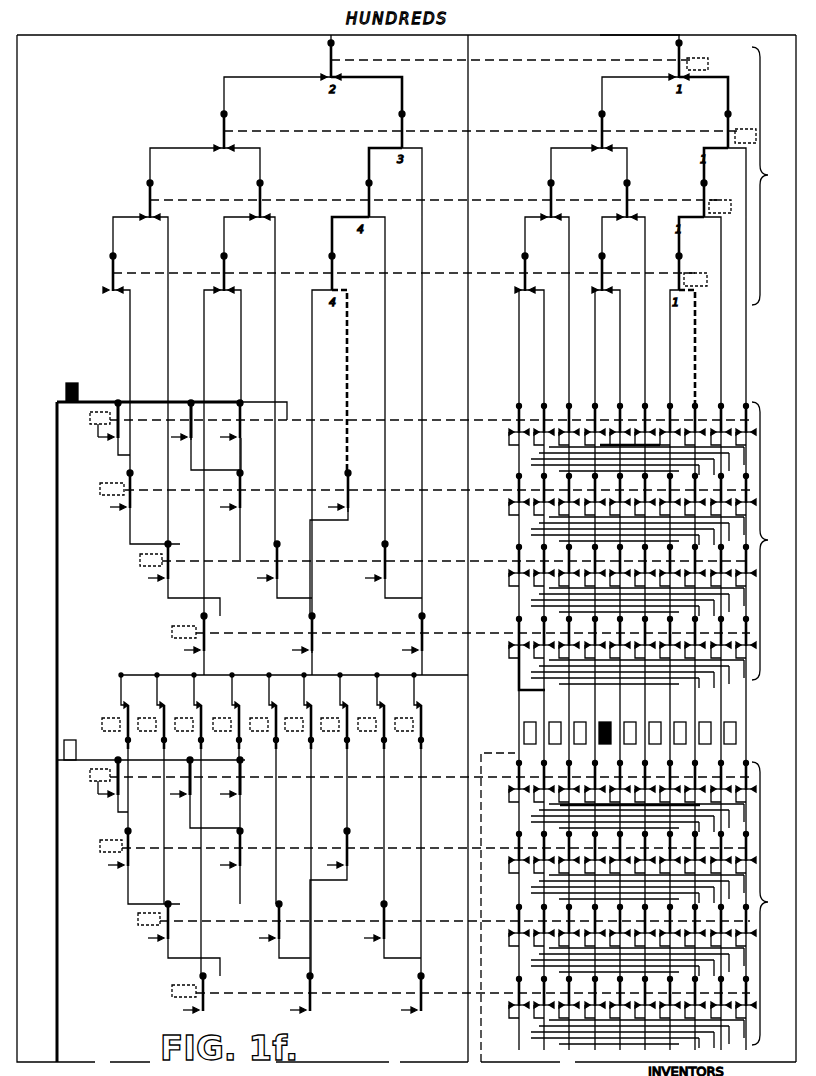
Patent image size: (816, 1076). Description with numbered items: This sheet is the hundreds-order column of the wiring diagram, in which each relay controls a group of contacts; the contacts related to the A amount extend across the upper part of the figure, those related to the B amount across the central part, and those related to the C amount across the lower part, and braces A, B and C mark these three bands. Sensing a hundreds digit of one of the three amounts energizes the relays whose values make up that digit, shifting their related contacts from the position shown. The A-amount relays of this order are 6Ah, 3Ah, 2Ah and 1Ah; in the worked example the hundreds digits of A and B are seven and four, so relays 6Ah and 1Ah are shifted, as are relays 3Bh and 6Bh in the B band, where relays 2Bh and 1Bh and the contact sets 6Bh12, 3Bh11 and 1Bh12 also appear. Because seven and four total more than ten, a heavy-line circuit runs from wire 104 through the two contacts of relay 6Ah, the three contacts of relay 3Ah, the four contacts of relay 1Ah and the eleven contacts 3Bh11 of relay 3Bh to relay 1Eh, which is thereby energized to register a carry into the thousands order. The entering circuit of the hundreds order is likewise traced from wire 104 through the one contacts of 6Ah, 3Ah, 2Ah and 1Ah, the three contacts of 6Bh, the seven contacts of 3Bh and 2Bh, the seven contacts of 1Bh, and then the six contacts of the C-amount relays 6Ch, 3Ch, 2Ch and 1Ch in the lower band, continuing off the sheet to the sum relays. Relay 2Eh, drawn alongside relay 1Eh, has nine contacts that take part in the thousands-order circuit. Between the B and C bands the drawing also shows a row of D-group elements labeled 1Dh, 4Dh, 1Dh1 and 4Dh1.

The wire 104 is at (630, 39).
The six-value A-amount hundreds relay 6Ah is at (706, 60).
The three-value A-amount hundreds relay 3Ah is at (744, 128).
The two-value A-amount hundreds relay 2Ah is at (720, 199).
The one-value A-amount hundreds relay 1Ah is at (697, 272).
The A amount contact group A is at (767, 176).
The B amount contact group B is at (767, 541).
The C amount contact group C is at (768, 903).
The hundreds-order carry relay 1Eh is at (70, 382).
The hundreds-order carry relay 2Eh is at (78, 752).
The six-value B-amount hundreds relay 6Bh is at (102, 411).
The contact 12 of relay 6Bh 6Bh12 is at (190, 420).
The three-value B-amount hundreds relay 3Bh is at (100, 497).
The eleven contacts of the three-value B-amount relay 3Bh11 is at (350, 508).
The two-value B-amount hundreds relay 2Bh is at (140, 567).
The one-value B-amount hundreds relay 1Bh is at (172, 637).
The contact 12 of relay 1Bh 1Bh12 is at (304, 650).
The relay 1Dh1 is at (120, 704).
The relay 4Dh1 is at (232, 692).
The relay 1Dh is at (524, 732).
The relay 4Dh is at (606, 720).
The six-value C-amount hundreds relay 6Ch is at (98, 782).
The three-value C-amount hundreds relay 3Ch is at (100, 852).
The two-value C-amount hundreds relay 2Ch is at (138, 920).
The one-value C-amount hundreds relay 1Ch is at (172, 991).